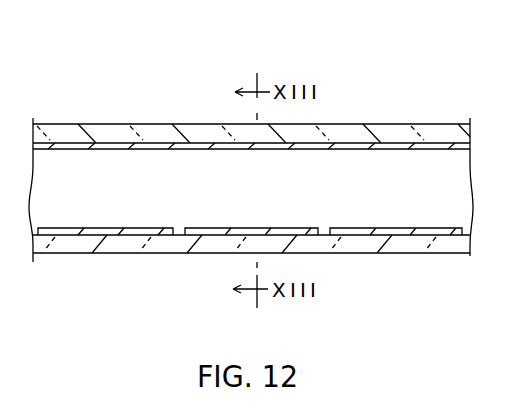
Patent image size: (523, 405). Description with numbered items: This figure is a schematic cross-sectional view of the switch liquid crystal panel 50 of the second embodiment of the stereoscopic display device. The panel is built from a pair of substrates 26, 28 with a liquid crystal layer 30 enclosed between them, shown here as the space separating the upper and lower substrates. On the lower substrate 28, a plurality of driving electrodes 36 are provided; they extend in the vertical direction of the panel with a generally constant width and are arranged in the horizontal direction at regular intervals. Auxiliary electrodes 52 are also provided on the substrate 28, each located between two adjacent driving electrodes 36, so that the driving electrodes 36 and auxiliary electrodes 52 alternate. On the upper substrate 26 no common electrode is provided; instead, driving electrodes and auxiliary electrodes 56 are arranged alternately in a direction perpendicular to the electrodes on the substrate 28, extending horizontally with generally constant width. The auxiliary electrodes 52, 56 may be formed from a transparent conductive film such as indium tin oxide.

The switch liquid crystal panel 50 is at (452, 123).
The substrate 26 is at (427, 135).
The auxiliary electrode 56 is at (125, 145).
The liquid crystal layer 30 is at (194, 163).
The substrate 28 is at (404, 245).
The driving electrode 36 is at (92, 254).
The auxiliary electrode 52 is at (192, 253).